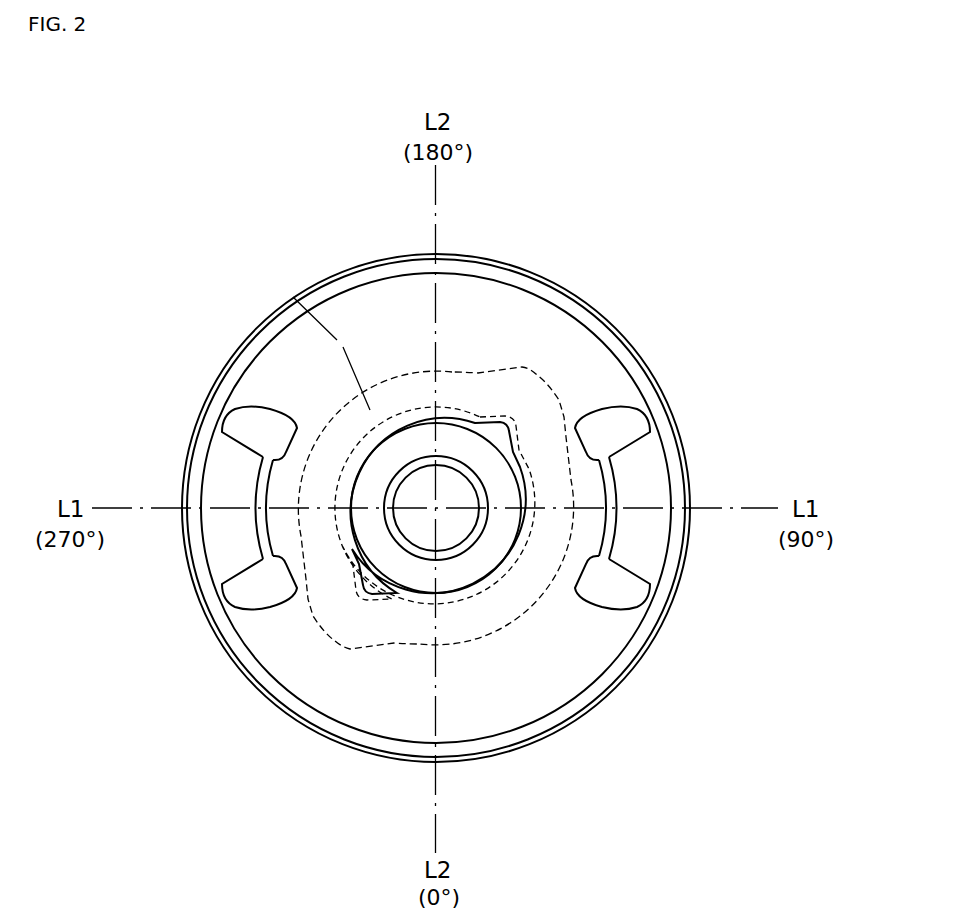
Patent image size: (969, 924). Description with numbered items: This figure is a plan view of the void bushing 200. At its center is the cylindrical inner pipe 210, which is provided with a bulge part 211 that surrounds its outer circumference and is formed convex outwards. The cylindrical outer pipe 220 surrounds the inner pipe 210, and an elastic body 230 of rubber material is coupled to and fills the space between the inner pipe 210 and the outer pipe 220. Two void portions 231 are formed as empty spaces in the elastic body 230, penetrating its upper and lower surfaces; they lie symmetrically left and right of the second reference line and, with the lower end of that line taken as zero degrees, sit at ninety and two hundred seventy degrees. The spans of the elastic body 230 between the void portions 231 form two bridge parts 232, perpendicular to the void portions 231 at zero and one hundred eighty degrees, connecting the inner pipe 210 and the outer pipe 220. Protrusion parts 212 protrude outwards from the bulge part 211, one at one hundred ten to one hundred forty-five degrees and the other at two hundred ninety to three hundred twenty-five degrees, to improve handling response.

The void bushing 200 is at (634, 279).
The inner pipe 210 is at (470, 568).
The bulge part 211 is at (288, 288).
The protrusion part 212 is at (532, 400).
The outer pipe 220 is at (637, 347).
The elastic body 230 is at (387, 296).
The void portion 231 is at (620, 428).
The bridge part 232 is at (447, 323).